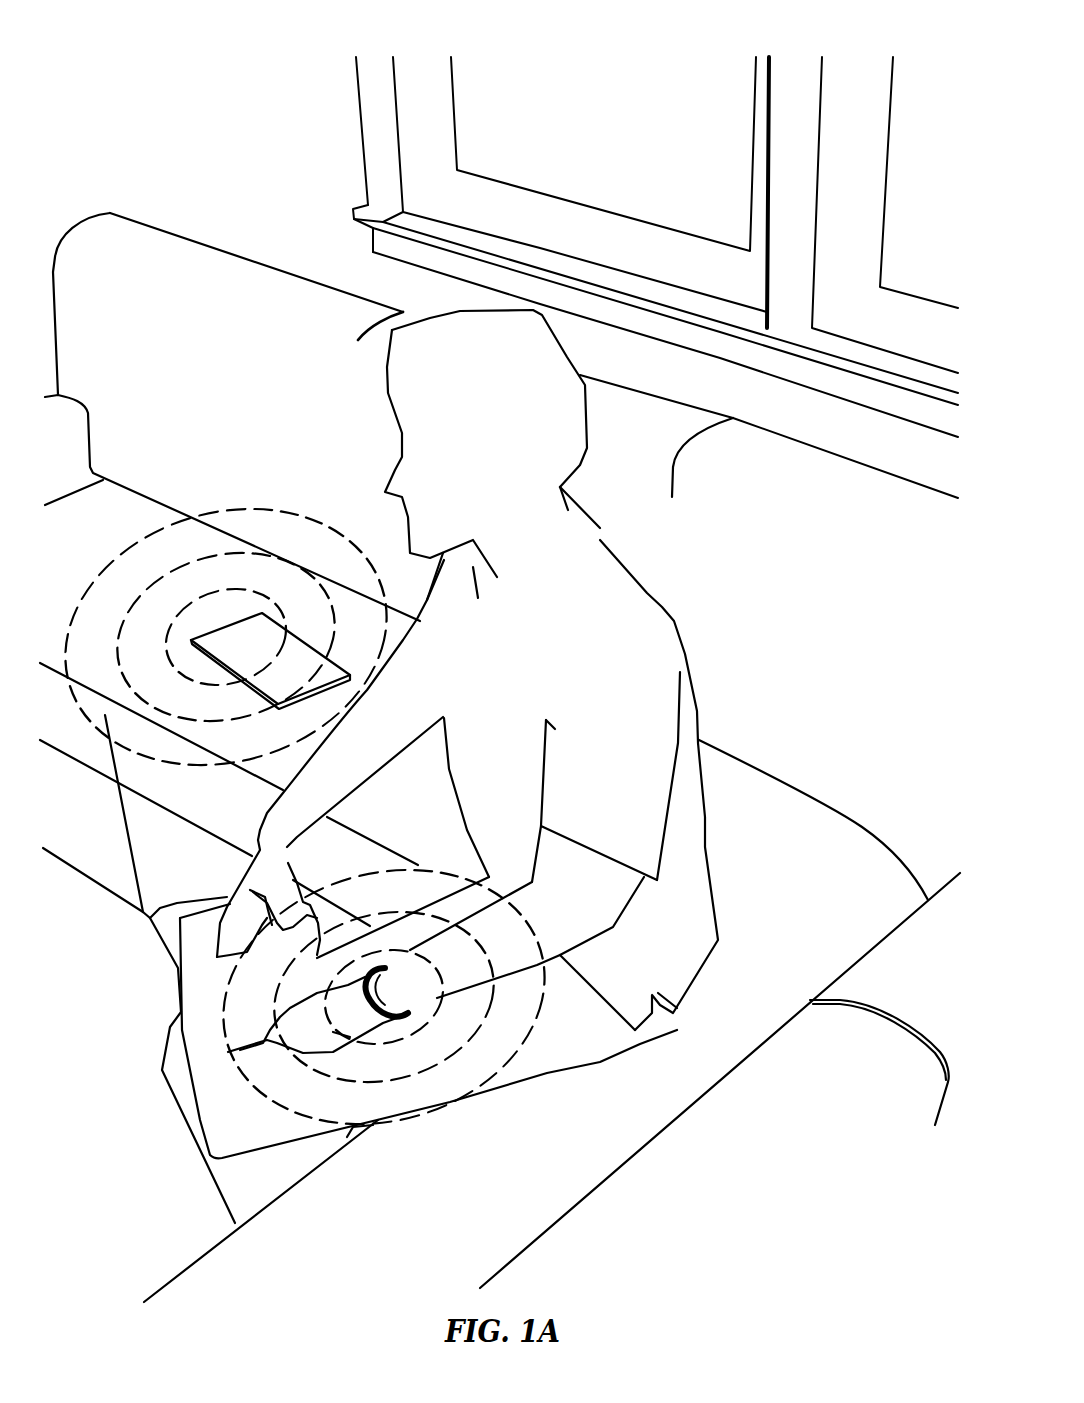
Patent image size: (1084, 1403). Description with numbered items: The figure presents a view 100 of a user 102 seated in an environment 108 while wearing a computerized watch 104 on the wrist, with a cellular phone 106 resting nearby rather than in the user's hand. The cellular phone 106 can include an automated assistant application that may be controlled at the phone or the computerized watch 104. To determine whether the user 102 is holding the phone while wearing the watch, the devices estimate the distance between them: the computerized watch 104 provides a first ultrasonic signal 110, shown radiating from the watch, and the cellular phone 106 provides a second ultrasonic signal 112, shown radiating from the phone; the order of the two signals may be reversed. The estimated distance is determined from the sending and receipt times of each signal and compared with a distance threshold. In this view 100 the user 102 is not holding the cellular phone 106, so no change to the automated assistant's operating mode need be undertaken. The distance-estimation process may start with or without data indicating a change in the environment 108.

The view 100 is at (188, 63).
The user 102 is at (570, 651).
The computerized watch 104 is at (367, 968).
The cellular phone 106 is at (262, 658).
The environment 108 is at (125, 1024).
The first ultrasonic signal 110 is at (444, 872).
The second ultrasonic signal 112 is at (277, 510).